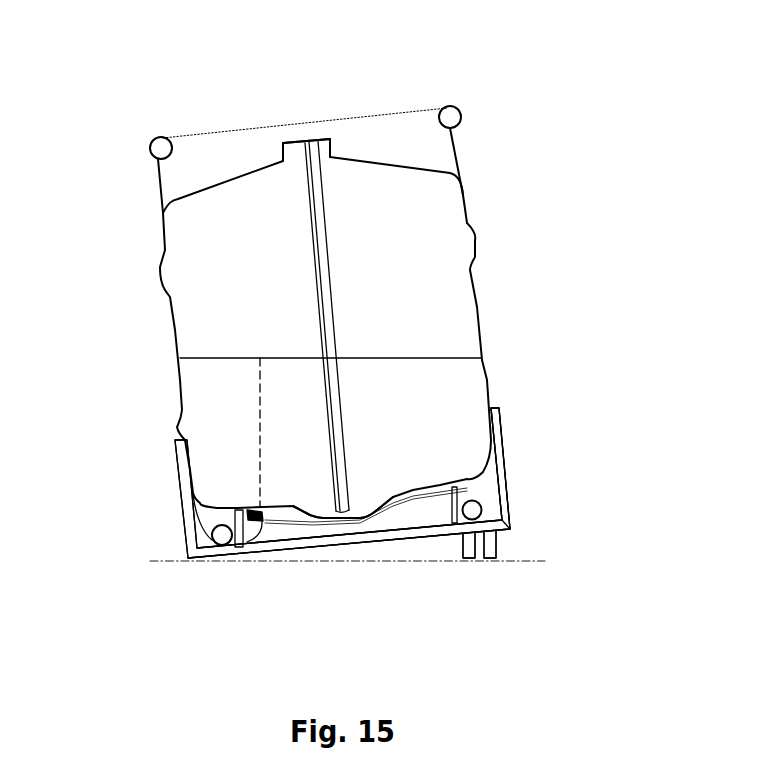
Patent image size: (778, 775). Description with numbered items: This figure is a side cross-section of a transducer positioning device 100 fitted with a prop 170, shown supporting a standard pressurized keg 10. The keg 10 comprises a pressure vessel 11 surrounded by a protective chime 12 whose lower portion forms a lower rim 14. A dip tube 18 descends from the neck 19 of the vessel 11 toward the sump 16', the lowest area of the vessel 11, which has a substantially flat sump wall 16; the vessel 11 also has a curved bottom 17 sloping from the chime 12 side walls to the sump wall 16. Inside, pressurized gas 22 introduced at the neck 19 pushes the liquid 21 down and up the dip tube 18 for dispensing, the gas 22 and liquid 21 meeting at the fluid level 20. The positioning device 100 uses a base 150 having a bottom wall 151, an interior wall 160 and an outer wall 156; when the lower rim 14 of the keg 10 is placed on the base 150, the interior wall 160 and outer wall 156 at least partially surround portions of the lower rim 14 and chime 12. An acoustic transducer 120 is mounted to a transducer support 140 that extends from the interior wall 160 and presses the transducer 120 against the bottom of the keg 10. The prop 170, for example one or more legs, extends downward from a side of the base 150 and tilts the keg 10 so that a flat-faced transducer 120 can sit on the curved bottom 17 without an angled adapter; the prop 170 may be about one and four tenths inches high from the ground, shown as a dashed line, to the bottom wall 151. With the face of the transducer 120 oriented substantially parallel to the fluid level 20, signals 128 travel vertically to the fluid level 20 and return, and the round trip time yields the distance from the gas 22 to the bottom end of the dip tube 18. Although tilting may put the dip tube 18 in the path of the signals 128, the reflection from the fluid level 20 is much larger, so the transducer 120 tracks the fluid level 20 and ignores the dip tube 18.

The keg 10 is at (155, 187).
The pressure vessel 11 is at (252, 263).
The chime 12 is at (392, 130).
The lower rim 14 is at (210, 542).
The sump wall 16 is at (352, 558).
The sump 16' is at (357, 578).
The curved bottom 17 is at (405, 513).
The dip tube 18 is at (313, 232).
The neck 19 is at (320, 140).
The fluid level 20 is at (453, 357).
The liquid 21 is at (467, 400).
The pressurized gas 22 is at (440, 317).
The positioning device 100 is at (187, 557).
The acoustic transducer 120 is at (268, 543).
The signals 128 is at (260, 440).
The transducer support 140 is at (293, 520).
The base 150 is at (505, 497).
The bottom wall 151 is at (502, 528).
The outer wall 156 is at (497, 445).
The interior wall 160 is at (450, 507).
The prop 170 is at (468, 557).